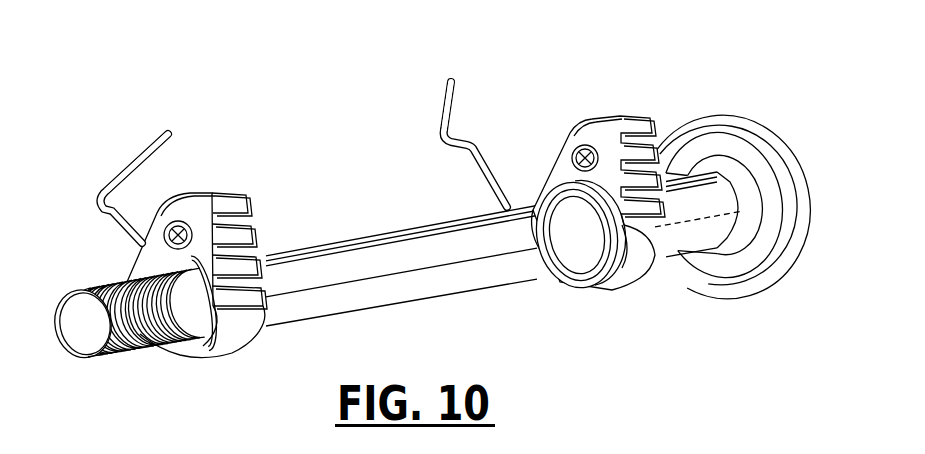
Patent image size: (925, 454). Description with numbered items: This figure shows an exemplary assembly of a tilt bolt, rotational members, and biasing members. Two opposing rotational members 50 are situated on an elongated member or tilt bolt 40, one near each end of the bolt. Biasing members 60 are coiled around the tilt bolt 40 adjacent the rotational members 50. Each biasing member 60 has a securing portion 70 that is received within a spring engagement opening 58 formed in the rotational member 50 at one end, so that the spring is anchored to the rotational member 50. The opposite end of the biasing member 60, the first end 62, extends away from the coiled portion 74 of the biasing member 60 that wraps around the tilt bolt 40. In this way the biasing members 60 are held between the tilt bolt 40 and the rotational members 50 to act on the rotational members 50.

The tilt bolt 40 is at (295, 260).
The rotational member 50 is at (185, 212).
The spring engagement opening 58 is at (576, 152).
The biasing member 60 is at (283, 144).
The first end 62 is at (167, 130).
The securing portion 70 is at (588, 147).
The coiled portion 74 is at (590, 282).